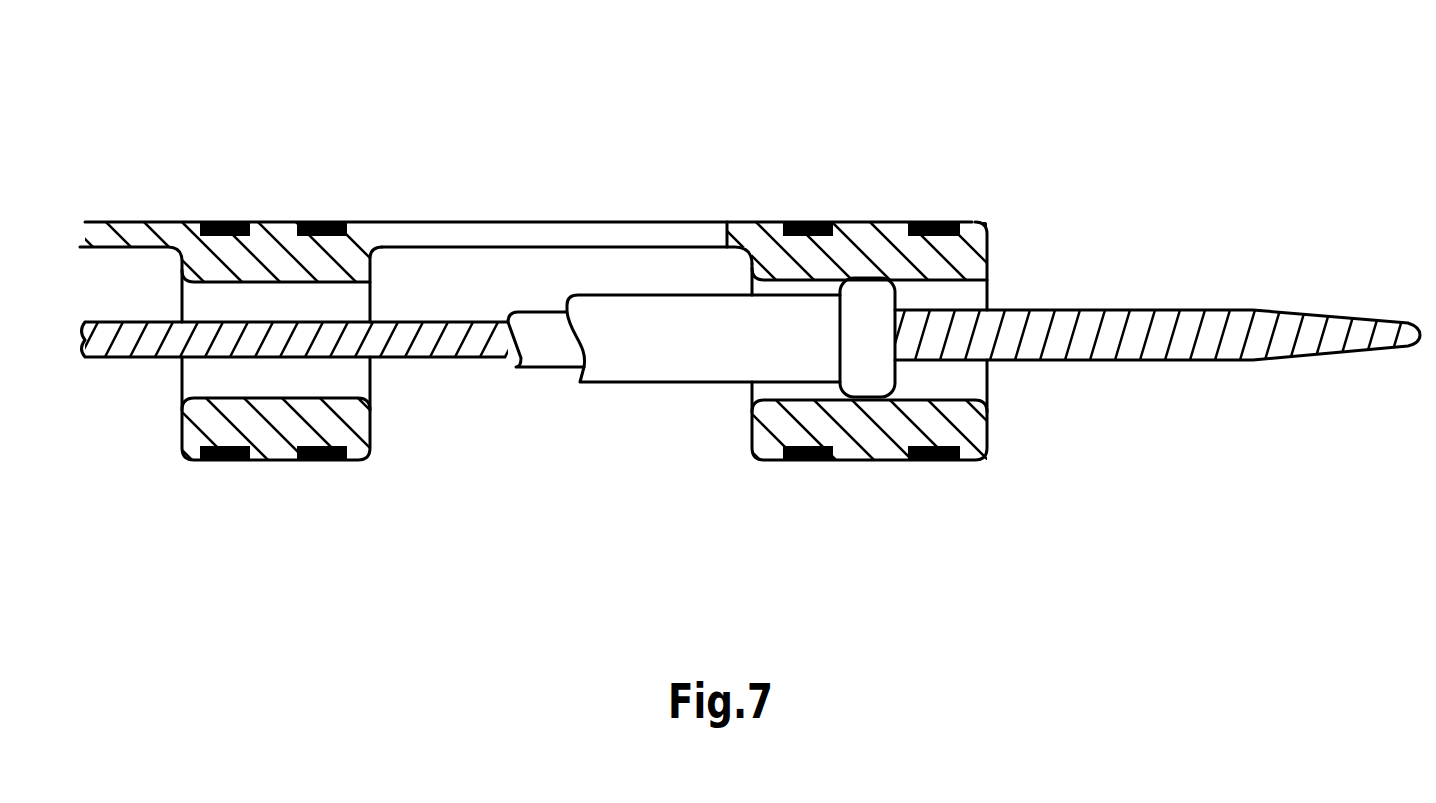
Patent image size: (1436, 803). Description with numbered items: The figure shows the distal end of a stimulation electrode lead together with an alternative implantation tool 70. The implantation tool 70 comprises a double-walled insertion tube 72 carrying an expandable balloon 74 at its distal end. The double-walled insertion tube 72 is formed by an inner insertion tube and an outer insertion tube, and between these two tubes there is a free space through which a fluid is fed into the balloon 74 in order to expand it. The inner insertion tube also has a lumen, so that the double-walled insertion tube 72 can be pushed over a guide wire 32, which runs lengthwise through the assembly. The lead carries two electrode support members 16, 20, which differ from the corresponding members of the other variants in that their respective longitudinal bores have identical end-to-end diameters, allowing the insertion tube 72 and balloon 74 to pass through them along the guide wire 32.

The electrode support member 16 is at (268, 245).
The electrode support member 20 is at (772, 237).
The guide wire 32 is at (1220, 345).
The implantation tool 70 is at (688, 382).
The double-walled insertion tube 72 is at (555, 424).
The expandable balloon 74 is at (863, 300).